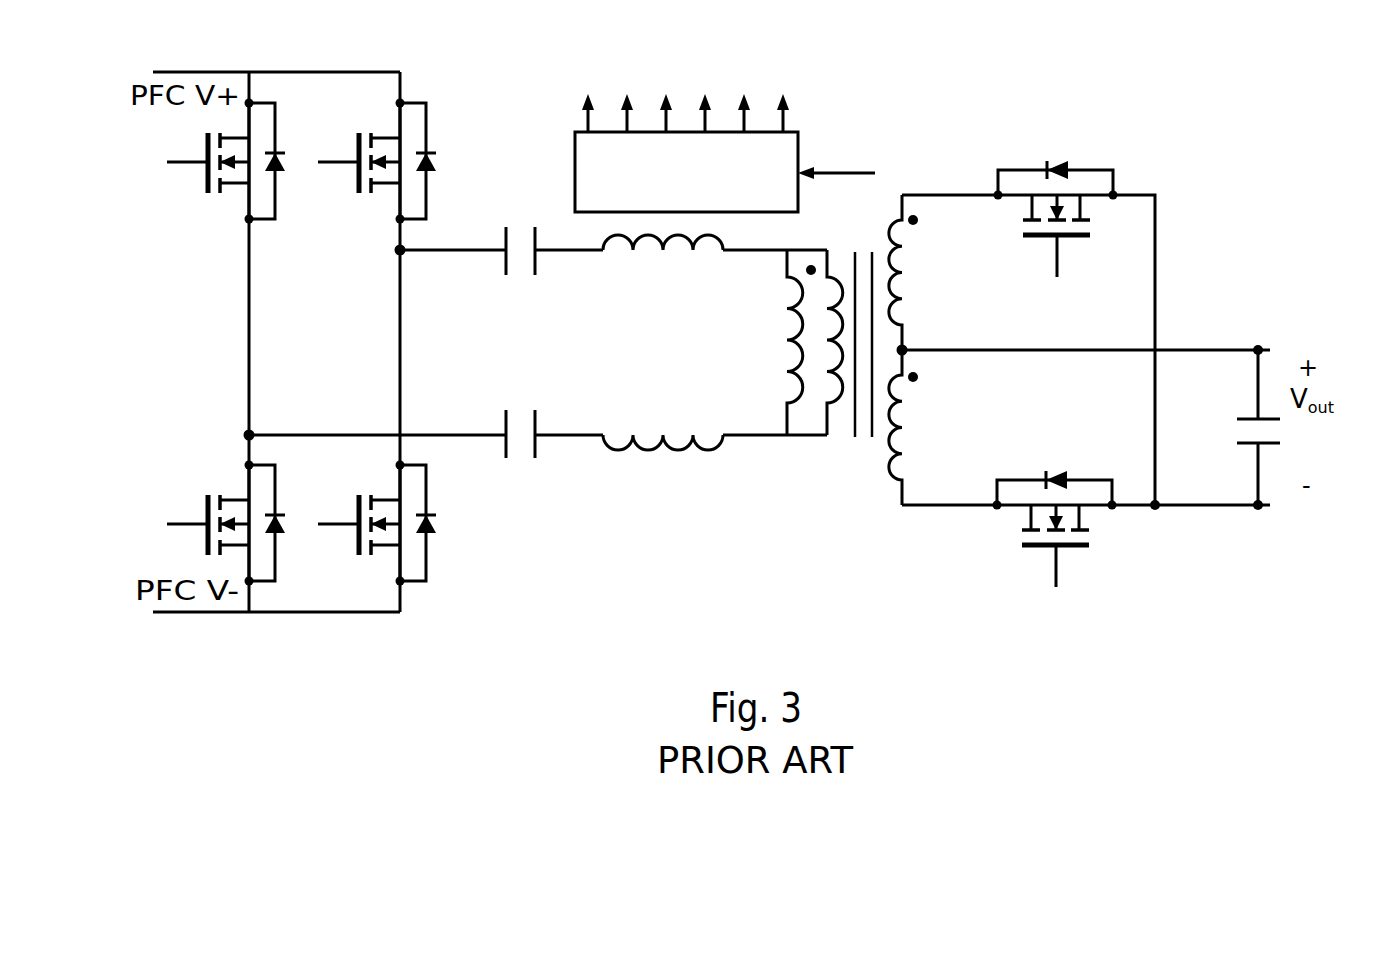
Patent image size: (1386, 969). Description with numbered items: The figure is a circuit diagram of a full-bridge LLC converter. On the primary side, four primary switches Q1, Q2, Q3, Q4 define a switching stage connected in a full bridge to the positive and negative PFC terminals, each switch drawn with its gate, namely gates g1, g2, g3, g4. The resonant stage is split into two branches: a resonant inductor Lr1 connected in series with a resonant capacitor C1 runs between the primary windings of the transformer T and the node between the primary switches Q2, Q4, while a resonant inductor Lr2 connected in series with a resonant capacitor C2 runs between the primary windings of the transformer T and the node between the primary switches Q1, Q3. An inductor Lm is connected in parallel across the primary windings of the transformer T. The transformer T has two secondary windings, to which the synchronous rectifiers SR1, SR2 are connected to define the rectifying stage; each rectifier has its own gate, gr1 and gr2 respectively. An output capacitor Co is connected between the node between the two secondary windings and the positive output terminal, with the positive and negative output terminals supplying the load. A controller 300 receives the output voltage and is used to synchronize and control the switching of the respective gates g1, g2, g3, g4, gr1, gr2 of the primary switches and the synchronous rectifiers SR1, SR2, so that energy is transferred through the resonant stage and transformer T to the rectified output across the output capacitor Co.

The controller 300 is at (798, 136).
The primary switch Q1 is at (268, 157).
The primary switch Q2 is at (413, 157).
The primary switch Q3 is at (415, 521).
The primary switch Q4 is at (264, 521).
The gate g1 is at (187, 144).
The gate g2 is at (338, 144).
The gate g3 is at (338, 506).
The gate g4 is at (187, 506).
The resonant capacitor C1 is at (520, 234).
The resonant capacitor C2 is at (520, 453).
The resonant inductor Lr1 is at (660, 264).
The resonant inductor Lr2 is at (660, 426).
The inductor Lm is at (789, 342).
The transformer T is at (882, 350).
The synchronous rectifier SR1 is at (1029, 193).
The synchronous rectifier SR2 is at (1027, 508).
The gate gr1 is at (1037, 256).
The gate gr2 is at (1034, 566).
The output capacitor Co is at (1247, 427).